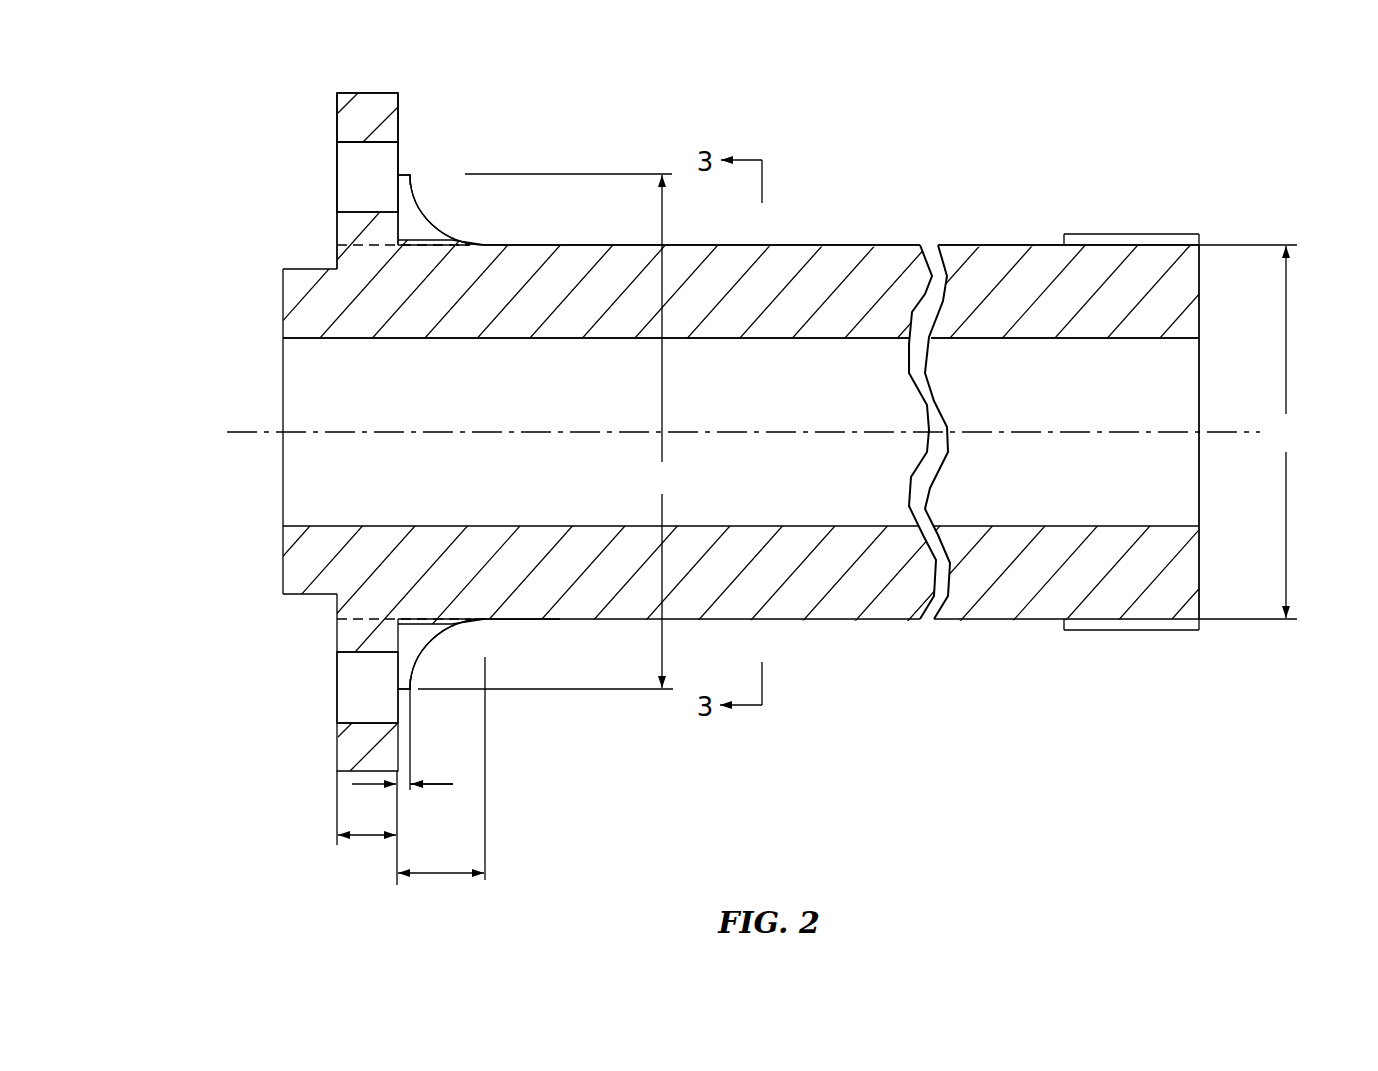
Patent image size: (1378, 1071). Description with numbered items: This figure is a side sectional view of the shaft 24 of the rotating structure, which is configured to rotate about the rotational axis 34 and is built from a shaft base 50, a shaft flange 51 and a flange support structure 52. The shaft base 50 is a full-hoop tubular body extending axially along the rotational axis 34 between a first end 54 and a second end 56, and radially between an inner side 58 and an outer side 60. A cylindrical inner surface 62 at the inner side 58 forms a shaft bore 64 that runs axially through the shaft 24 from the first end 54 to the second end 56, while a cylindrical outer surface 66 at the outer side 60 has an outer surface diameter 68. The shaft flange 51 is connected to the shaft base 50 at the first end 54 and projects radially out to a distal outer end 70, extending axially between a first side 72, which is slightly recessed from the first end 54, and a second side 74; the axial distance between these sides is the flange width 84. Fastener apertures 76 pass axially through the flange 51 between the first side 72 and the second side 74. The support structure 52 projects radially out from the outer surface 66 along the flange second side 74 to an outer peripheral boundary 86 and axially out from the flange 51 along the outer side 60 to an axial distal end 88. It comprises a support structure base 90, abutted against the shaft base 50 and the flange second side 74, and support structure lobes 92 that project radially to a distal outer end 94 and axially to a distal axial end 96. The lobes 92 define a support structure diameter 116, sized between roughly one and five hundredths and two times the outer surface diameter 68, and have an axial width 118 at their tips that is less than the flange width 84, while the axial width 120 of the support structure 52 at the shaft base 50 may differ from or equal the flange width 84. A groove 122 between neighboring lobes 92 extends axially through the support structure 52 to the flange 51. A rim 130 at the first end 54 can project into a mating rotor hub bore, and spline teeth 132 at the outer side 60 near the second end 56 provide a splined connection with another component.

The shaft 24 is at (1117, 125).
The rotational axis 34 is at (227, 433).
The shaft base 50 is at (818, 244).
The shaft flange 51 is at (402, 90).
The flange support structure 52 is at (424, 199).
The first end 54 is at (283, 302).
The second end 56 is at (1199, 290).
The inner side 58 is at (790, 345).
The outer side 60 is at (895, 245).
The inner surface 62 is at (993, 379).
The shaft bore 64 is at (611, 406).
The outer surface 66 is at (1055, 206).
The outer surface diameter 68 is at (1250, 432).
The distal outer end 70 is at (355, 92).
The first side 72 is at (337, 113).
The second side 74 is at (399, 107).
The fastener apertures 76 is at (344, 173).
The flange width 84 is at (368, 840).
The outer peripheral boundary 86 is at (403, 692).
The axial distal end 88 is at (478, 620).
The support structure base 90 is at (430, 247).
The support structure lobes 92 is at (437, 230).
The distal outer end 94 is at (402, 172).
The distal axial end 96 is at (453, 238).
The support structure diameter 116 is at (551, 431).
The axial width 118 is at (438, 787).
The axial width 120 is at (455, 877).
The groove 122 is at (395, 218).
The rim 130 is at (280, 580).
The spline teeth 132 is at (1175, 234).